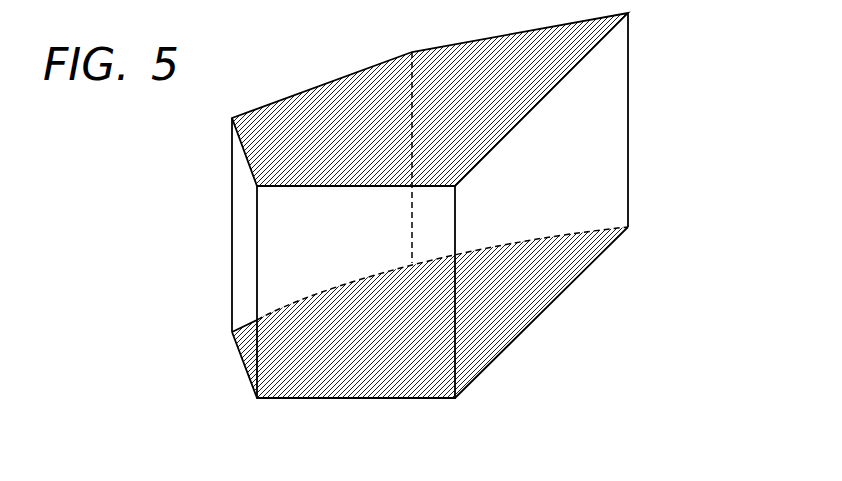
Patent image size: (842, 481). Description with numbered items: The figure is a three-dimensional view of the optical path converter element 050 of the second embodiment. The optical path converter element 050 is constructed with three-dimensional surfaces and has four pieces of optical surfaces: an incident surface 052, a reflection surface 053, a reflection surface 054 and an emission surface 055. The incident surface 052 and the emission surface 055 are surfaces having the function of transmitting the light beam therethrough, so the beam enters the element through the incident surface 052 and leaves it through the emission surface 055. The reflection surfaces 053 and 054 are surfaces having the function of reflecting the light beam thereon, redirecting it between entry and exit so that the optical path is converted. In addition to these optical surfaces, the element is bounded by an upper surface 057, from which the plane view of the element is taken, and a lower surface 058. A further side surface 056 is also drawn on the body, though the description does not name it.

The optical path converter element 050 is at (436, 230).
The incident surface 052 is at (325, 237).
The reflection surface 053 is at (357, 300).
The reflection surface 054 is at (537, 168).
The emission surface 055 is at (503, 237).
The left side face 056 is at (243, 281).
The upper surface 057 is at (310, 102).
The lower surface 058 is at (252, 355).